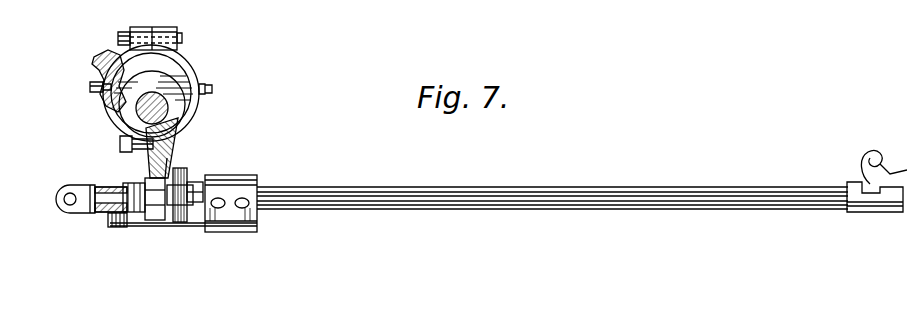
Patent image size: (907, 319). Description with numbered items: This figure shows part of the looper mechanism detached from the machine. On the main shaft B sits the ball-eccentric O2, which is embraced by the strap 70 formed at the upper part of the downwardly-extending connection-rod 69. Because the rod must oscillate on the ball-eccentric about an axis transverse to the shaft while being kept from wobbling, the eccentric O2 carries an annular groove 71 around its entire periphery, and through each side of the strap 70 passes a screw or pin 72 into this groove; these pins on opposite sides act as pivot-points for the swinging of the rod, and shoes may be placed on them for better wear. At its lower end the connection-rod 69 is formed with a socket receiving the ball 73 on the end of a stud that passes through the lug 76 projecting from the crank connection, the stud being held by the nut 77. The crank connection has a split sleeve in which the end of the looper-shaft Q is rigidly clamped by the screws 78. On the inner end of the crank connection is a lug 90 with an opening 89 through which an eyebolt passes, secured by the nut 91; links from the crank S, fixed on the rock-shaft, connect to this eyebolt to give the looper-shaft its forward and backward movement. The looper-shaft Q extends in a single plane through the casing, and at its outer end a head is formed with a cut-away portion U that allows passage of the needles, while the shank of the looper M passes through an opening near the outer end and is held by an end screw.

The strap 70 is at (193, 72).
The eccentric O2 is at (173, 82).
The main shaft B is at (158, 108).
The annular groove 71 is at (108, 110).
The screw or pin 72 is at (95, 90).
The crank S is at (58, 210).
The opening 89 is at (98, 217).
The lug 90 is at (113, 228).
The nut 91 is at (140, 183).
The ball 73 is at (150, 210).
The connection-rod 69 is at (164, 165).
The lug 76 is at (180, 212).
The nut 77 is at (196, 184).
The screws 78 is at (238, 208).
The looper-shaft Q is at (606, 210).
The cut-away portion U is at (868, 194).
The looper M is at (866, 168).